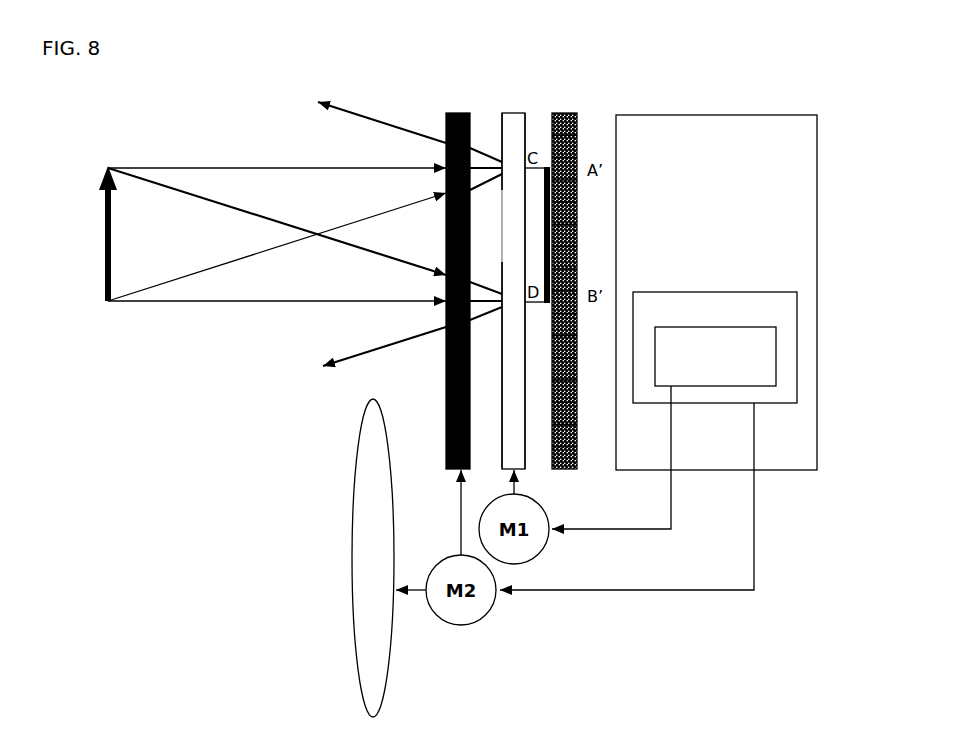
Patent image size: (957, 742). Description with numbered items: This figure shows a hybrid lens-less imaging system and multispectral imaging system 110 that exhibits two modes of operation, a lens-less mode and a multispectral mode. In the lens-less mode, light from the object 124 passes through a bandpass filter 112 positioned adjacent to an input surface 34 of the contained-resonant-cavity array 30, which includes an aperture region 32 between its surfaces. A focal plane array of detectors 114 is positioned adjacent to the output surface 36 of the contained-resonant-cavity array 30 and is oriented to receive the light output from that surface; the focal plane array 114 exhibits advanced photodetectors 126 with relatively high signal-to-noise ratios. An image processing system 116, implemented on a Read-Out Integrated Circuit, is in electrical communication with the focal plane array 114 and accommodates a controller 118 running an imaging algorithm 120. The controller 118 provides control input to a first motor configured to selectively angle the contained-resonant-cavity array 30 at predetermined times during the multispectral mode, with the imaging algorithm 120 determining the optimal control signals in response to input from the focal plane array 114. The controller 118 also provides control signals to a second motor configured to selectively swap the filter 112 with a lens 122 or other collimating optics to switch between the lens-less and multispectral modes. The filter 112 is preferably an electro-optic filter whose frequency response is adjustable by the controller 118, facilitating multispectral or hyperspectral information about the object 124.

The contained-resonant-cavity array 30 is at (515, 262).
The aperture opening 32 is at (502, 192).
The input surface 34 is at (502, 133).
The output surface 36 is at (528, 126).
The hybrid lens-less imaging system and multispectral imaging system 110 is at (748, 81).
The bandpass filter 112 is at (446, 113).
The focal plane array of detectors 114 is at (586, 279).
The image processing system 116 is at (728, 279).
The controller 118 is at (720, 358).
The imaging algorithm 120 is at (757, 387).
The lens 122 is at (392, 663).
The object 124 is at (112, 222).
The advanced photodetectors 126 is at (572, 433).